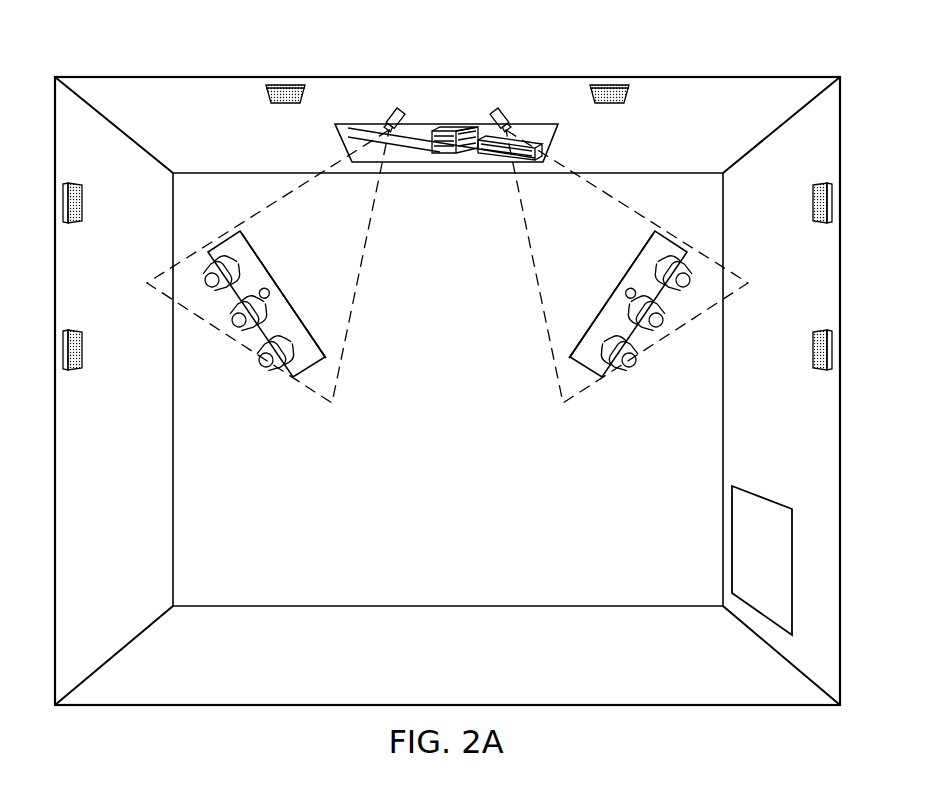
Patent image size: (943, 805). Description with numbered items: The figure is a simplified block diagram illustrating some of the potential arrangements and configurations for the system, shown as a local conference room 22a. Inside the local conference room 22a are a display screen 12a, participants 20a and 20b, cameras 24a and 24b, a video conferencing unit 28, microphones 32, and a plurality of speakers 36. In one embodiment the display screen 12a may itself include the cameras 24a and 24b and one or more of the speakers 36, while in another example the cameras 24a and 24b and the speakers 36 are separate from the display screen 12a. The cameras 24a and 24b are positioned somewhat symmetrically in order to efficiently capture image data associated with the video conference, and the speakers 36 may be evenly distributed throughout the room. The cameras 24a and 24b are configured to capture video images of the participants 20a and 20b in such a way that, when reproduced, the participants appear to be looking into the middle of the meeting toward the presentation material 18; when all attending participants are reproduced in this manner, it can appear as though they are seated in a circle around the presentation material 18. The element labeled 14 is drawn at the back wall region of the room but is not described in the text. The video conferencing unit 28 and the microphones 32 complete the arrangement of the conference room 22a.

The display screen 12a is at (782, 69).
The back wall 14 is at (231, 98).
The presentation material 18 is at (553, 141).
The participant 20a is at (327, 311).
The participant 20b is at (568, 311).
The local conference room 22a is at (466, 483).
The camera 24a is at (388, 113).
The camera 24b is at (507, 113).
The video conferencing unit 28 is at (732, 540).
The microphones 32 is at (270, 296).
The speakers 36 is at (284, 84).